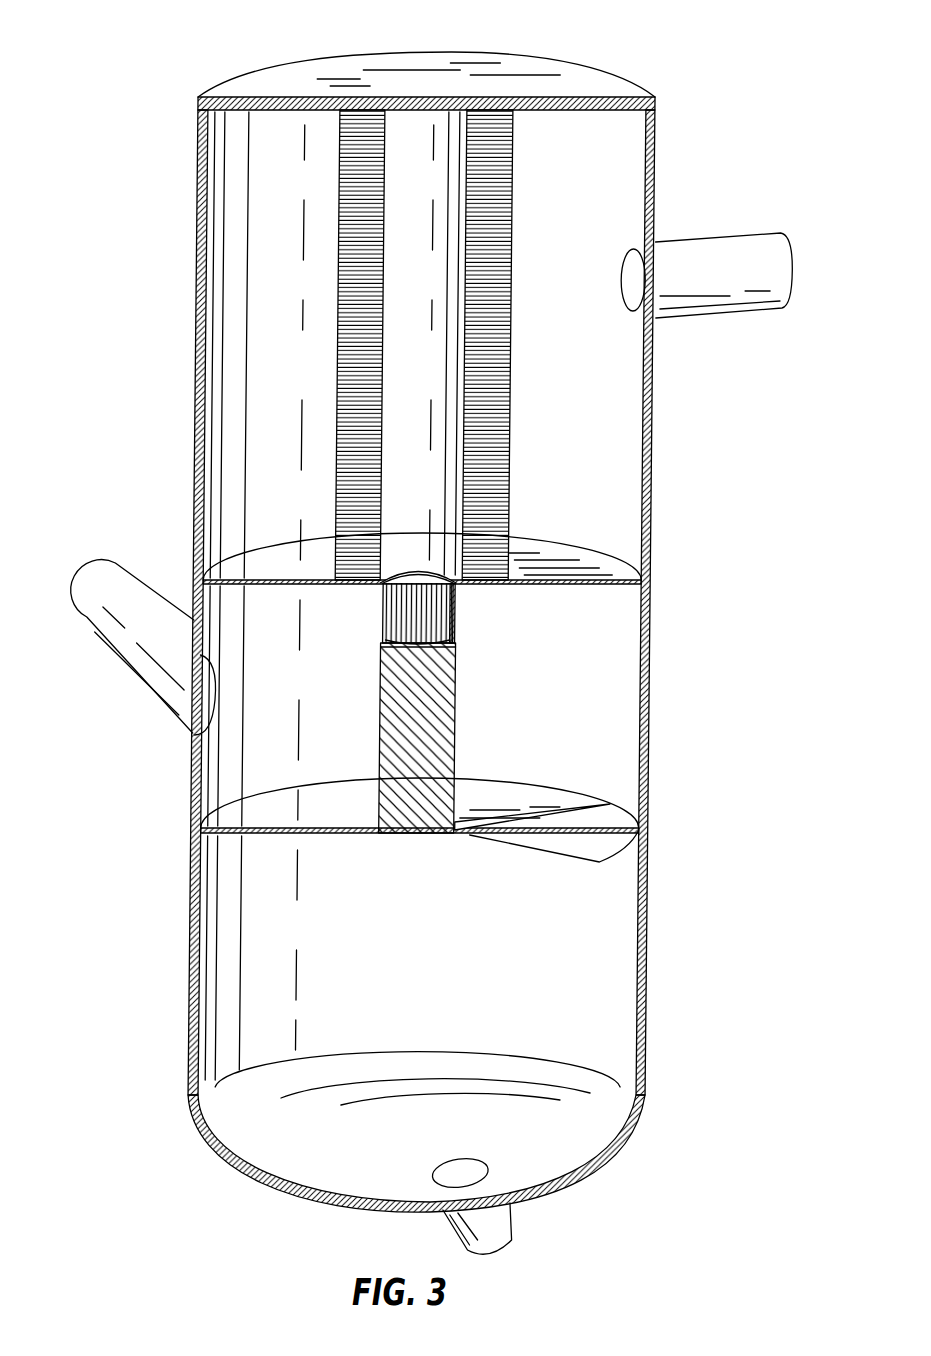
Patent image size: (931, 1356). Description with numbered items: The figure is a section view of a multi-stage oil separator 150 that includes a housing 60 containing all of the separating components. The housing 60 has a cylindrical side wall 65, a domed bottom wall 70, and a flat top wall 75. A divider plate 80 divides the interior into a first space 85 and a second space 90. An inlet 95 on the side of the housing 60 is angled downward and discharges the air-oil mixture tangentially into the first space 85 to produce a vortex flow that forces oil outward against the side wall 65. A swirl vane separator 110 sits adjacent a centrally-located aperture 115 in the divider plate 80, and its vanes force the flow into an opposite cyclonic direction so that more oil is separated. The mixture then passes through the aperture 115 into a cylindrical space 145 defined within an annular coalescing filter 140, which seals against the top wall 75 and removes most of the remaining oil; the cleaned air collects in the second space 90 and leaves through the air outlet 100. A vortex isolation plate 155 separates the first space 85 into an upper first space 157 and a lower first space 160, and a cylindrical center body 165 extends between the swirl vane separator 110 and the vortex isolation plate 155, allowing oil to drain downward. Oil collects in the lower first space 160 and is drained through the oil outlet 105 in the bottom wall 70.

The housing 60 is at (185, 959).
The cylindrical side wall 65 is at (655, 946).
The bottom wall 70 is at (240, 1170).
The top wall 75 is at (267, 77).
The divider plate 80 is at (282, 566).
The first space 85 is at (605, 786).
The second space 90 is at (600, 426).
The inlet 95 is at (130, 576).
The air outlet 100 is at (726, 248).
The oil outlet 105 is at (512, 1223).
The swirl vane separator 110 is at (455, 614).
The aperture 115 is at (423, 570).
The coalescing filter 140 is at (495, 206).
The cylindrical space 145 is at (415, 160).
The separator 150 is at (706, 80).
The vortex isolation plate 155 is at (354, 810).
The upper first space 157 is at (600, 654).
The lower first space 160 is at (262, 1021).
The center body 165 is at (432, 736).